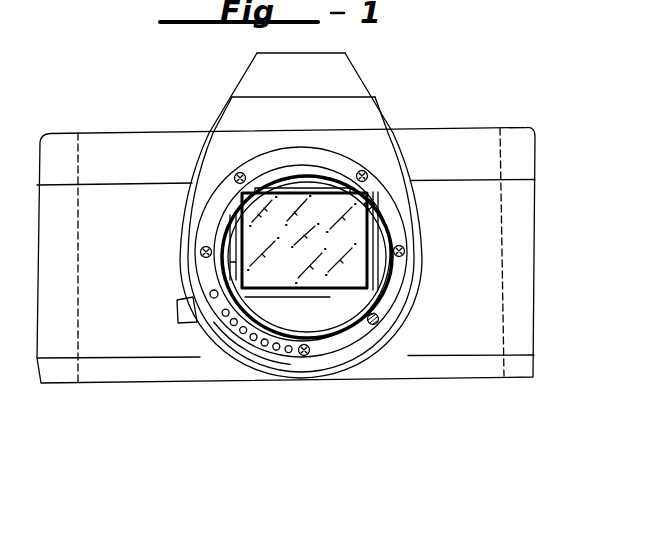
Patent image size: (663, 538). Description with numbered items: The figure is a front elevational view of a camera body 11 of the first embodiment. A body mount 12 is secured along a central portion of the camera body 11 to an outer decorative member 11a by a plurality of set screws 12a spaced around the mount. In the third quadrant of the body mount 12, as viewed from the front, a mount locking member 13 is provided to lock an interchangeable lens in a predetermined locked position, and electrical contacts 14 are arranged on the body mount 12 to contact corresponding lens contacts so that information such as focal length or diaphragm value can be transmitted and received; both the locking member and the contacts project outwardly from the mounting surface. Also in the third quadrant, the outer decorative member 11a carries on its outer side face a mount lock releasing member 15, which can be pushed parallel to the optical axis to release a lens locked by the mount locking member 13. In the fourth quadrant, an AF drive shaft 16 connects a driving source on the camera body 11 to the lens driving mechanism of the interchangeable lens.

The camera body 11 is at (530, 300).
The outer decorative member 11a is at (388, 335).
The body mount 12 is at (383, 200).
The set screws 12a is at (236, 173).
The mount locking member 13 is at (214, 298).
The electrical contacts 14 is at (246, 352).
The mount lock releasing member 15 is at (185, 322).
The AF drive shaft 16 is at (374, 325).